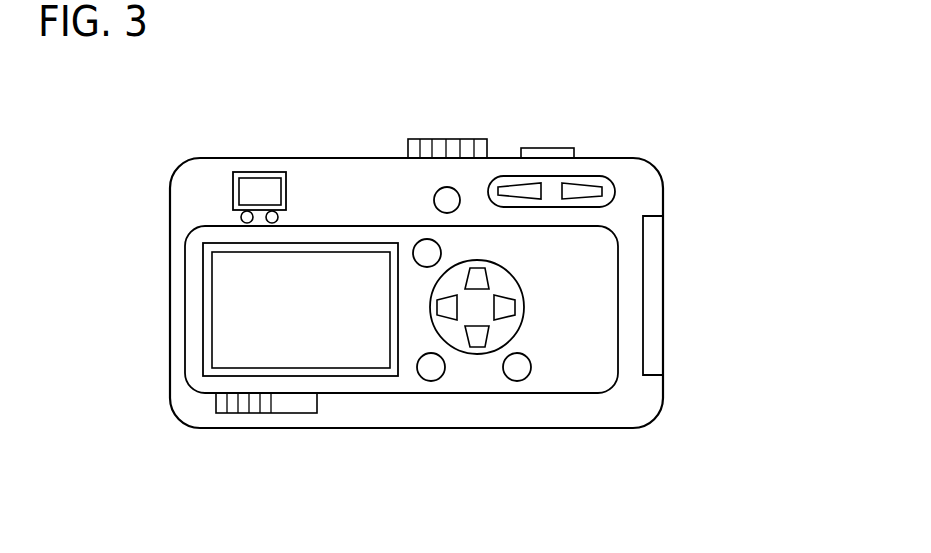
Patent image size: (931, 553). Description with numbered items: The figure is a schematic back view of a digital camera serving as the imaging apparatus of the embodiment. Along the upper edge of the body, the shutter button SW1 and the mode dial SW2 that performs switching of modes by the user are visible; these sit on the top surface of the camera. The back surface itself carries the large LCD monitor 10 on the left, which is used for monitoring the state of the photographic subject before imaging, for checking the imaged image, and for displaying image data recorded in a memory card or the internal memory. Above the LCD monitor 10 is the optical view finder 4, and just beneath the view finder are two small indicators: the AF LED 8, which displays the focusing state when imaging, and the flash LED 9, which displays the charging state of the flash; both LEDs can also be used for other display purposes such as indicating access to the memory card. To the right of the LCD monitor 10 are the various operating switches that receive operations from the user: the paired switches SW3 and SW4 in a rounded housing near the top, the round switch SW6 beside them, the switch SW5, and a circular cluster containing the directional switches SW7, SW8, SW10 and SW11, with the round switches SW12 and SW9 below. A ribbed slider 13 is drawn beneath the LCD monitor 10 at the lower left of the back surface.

The optical view finder 4 is at (270, 189).
The AF LED 8 is at (241, 217).
The flash LED 9 is at (266, 217).
The LCD monitor 10 is at (362, 345).
The mode switch lever 13 is at (262, 405).
The shutter button SW1 is at (539, 148).
The mode dial SW2 is at (472, 152).
The switch SW3 is at (520, 190).
The switch SW4 is at (582, 192).
The switch SW5 is at (427, 253).
The switch SW6 is at (447, 200).
The switch SW7 is at (480, 279).
The switch SW8 is at (508, 308).
The switch SW9 is at (517, 367).
The switch SW10 is at (480, 337).
The switch SW11 is at (449, 308).
The switch SW12 is at (431, 367).